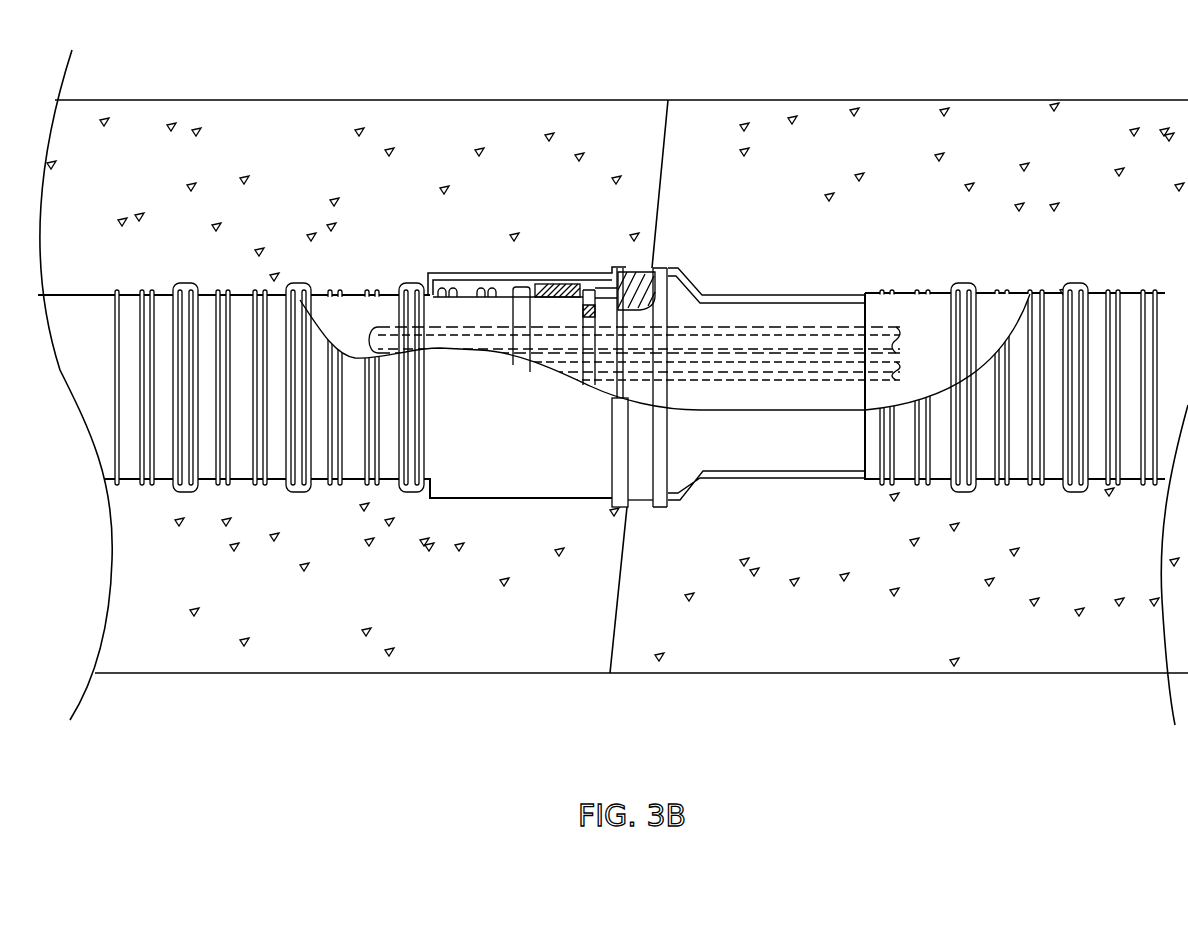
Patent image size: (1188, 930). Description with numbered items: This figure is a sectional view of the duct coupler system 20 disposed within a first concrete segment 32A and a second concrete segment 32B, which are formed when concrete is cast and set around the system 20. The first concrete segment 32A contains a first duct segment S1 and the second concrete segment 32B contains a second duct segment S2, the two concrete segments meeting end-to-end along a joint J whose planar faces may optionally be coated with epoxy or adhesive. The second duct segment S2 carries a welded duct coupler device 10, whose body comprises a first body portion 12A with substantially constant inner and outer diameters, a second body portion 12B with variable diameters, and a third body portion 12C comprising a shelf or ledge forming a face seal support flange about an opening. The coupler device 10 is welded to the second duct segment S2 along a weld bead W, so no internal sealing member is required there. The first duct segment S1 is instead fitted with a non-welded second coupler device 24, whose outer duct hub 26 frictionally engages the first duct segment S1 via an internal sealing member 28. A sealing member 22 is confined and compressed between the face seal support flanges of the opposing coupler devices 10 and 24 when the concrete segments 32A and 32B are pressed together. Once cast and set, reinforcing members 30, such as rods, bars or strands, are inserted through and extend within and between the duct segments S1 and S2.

The duct coupler device 10 is at (813, 276).
The first body portion 12A is at (778, 292).
The second body portion 12B is at (690, 270).
The third body portion 12C is at (665, 270).
The duct coupler system 20 is at (316, 222).
The sealing member 22 is at (633, 270).
The second coupler device 24 is at (434, 268).
The duct hub 26 is at (505, 270).
The internal sealing member 28 is at (575, 281).
The reinforcing members 30 is at (824, 326).
The first concrete segment 32A is at (172, 112).
The second concrete segment 32B is at (920, 117).
The joint J is at (654, 104).
The first duct segment S1 is at (300, 500).
The second duct segment S2 is at (965, 498).
The weld bead W is at (870, 490).